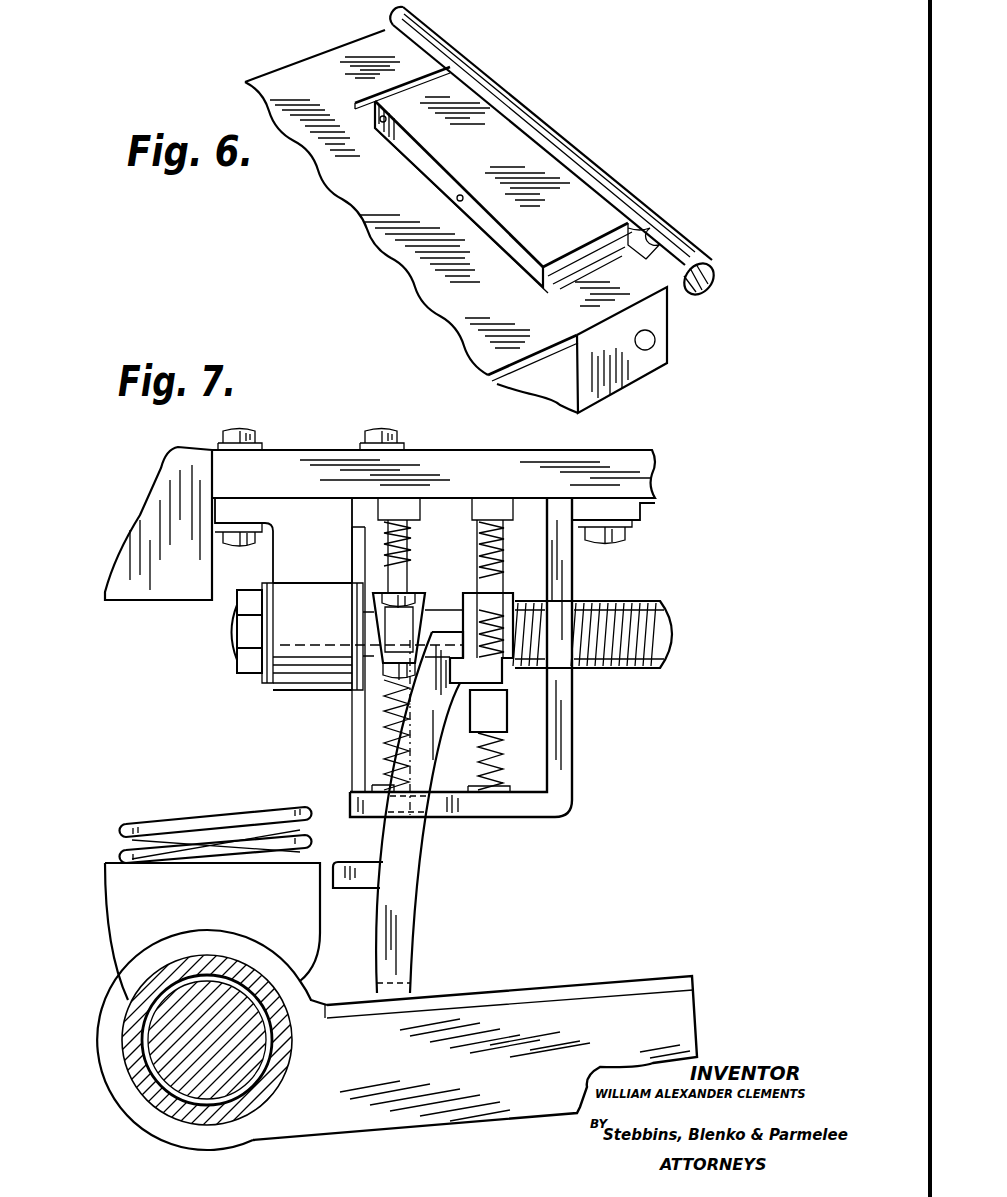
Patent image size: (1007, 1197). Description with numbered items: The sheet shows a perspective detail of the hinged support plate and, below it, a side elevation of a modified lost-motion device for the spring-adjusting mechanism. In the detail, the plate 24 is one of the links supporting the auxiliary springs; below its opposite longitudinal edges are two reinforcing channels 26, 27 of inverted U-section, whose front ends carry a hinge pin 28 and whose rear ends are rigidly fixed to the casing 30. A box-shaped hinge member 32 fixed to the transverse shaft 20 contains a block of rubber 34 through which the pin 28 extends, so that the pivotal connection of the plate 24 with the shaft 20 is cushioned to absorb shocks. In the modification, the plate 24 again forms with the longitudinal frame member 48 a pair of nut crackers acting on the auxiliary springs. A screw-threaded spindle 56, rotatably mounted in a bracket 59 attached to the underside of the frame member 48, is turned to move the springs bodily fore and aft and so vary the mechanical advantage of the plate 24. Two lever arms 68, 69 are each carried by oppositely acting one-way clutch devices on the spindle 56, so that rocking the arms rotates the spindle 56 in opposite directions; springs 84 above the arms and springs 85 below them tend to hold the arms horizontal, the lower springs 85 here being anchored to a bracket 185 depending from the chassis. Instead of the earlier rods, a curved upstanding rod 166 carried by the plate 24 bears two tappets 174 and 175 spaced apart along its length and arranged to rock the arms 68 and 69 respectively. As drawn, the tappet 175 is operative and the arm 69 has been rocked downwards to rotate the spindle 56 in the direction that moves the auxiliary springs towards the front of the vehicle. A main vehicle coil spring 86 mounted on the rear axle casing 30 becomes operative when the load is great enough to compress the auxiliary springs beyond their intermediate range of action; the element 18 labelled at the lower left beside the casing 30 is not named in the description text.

In FIG. 7, the clamp body 18 is at (120, 983).
In FIG. 6, the transverse shaft 20 is at (450, 50).
In FIG. 6, the plate 24 is at (388, 258).
In FIG. 7, the plate 24 is at (498, 992).
In FIG. 6, the reinforcing channel 26 is at (522, 396).
In FIG. 7, the reinforcing channel 26 is at (594, 993).
In FIG. 6, the reinforcing channel 27 is at (345, 47).
In FIG. 6, the hinge pin 28 is at (647, 351).
In FIG. 7, the casing 30 is at (127, 1020).
In FIG. 6, the box-shaped hinge member 32 is at (518, 127).
In FIG. 6, the block of rubber 34 is at (632, 236).
In FIG. 7, the longitudinal frame member 48 is at (650, 505).
In FIG. 7, the screw-threaded spindle 56 is at (637, 670).
In FIG. 7, the bracket 59 is at (273, 683).
In FIG. 7, the lever arm 68 is at (377, 680).
In FIG. 7, the lever arm 69 is at (474, 733).
In FIG. 7, the spring 84 is at (484, 540).
In FIG. 7, the spring 85 is at (390, 778).
In FIG. 7, the main vehicle coil spring 86 is at (173, 817).
In FIG. 7, the curved upstanding rod 166 is at (420, 858).
In FIG. 7, the tappet 174 is at (358, 890).
In FIG. 7, the tappet 175 is at (502, 672).
In FIG. 7, the bracket 185 is at (572, 793).